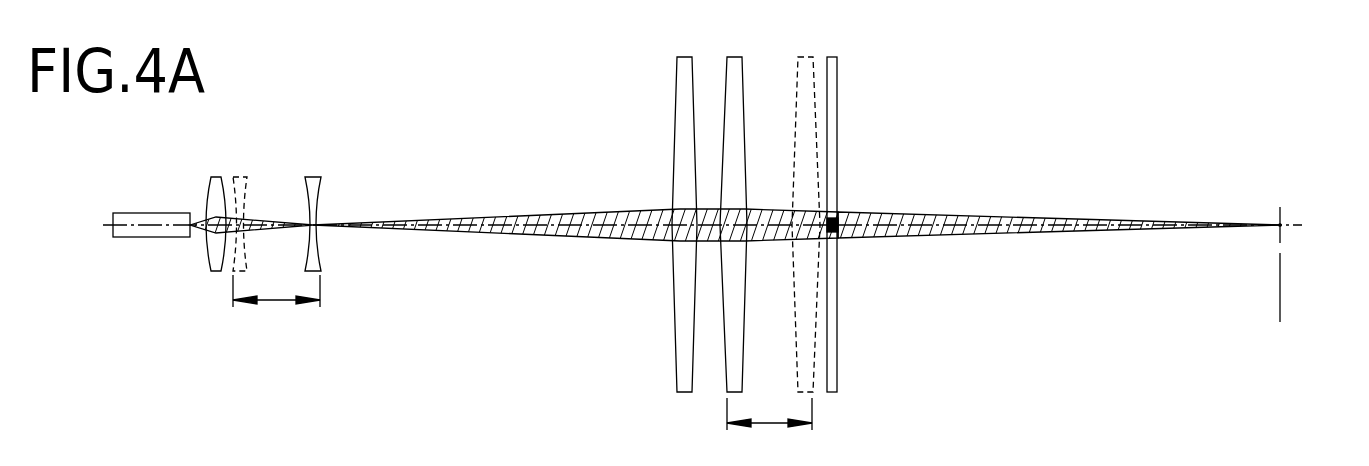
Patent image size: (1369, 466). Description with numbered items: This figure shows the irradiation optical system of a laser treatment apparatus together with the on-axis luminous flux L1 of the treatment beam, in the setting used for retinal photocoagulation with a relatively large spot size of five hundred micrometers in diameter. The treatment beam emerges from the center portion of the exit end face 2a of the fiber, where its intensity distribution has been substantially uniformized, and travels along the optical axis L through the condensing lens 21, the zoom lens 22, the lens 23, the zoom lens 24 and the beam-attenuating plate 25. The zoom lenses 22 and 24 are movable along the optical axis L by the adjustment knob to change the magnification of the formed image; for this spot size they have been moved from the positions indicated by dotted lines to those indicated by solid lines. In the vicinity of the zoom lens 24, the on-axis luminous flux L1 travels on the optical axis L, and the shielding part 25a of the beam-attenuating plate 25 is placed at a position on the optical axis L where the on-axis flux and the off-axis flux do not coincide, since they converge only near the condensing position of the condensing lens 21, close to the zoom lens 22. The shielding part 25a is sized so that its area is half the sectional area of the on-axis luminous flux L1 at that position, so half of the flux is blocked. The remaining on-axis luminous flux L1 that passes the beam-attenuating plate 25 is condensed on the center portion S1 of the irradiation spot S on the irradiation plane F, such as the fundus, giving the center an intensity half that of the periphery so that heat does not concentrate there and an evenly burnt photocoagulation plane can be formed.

The exit end face 2a is at (198, 212).
The condensing lens 21 is at (213, 272).
The zoom lens 22 is at (318, 257).
The lens 23 is at (674, 347).
The zoom lens 24 is at (745, 112).
The beam-attenuating plate 25 is at (838, 357).
The shielding part 25a is at (838, 233).
The on-axis luminous flux L1 is at (613, 208).
The optical axis L is at (1027, 232).
The irradiation spot S is at (1282, 217).
The center portion S1 is at (1283, 228).
The irradiation plane F is at (1280, 272).